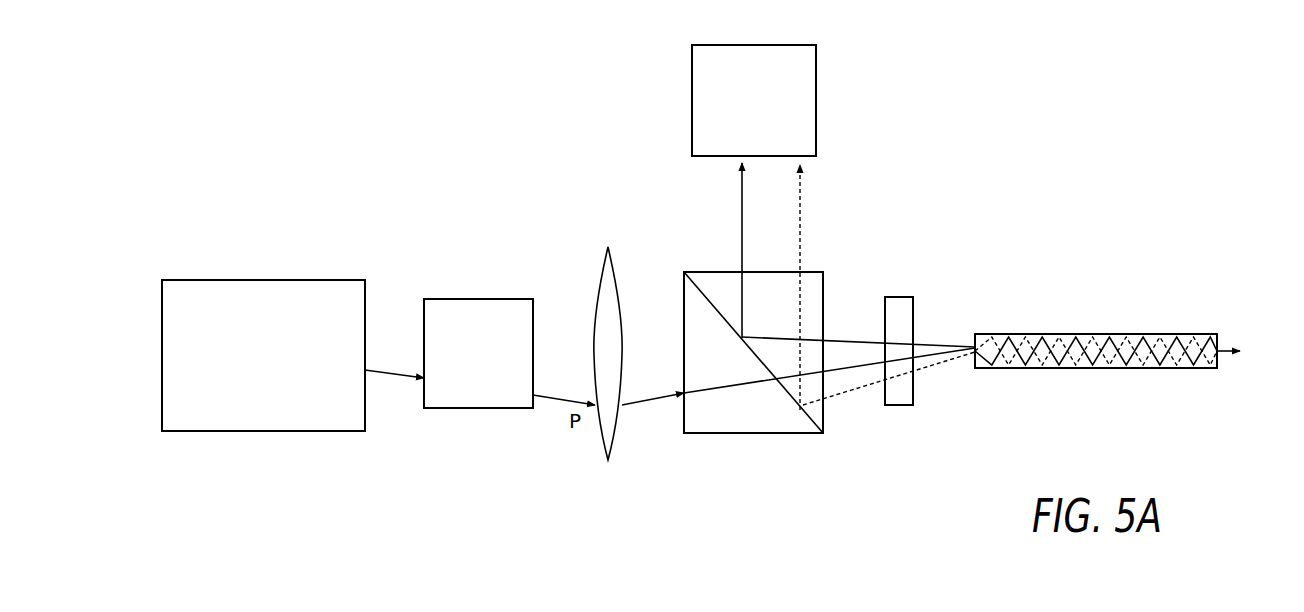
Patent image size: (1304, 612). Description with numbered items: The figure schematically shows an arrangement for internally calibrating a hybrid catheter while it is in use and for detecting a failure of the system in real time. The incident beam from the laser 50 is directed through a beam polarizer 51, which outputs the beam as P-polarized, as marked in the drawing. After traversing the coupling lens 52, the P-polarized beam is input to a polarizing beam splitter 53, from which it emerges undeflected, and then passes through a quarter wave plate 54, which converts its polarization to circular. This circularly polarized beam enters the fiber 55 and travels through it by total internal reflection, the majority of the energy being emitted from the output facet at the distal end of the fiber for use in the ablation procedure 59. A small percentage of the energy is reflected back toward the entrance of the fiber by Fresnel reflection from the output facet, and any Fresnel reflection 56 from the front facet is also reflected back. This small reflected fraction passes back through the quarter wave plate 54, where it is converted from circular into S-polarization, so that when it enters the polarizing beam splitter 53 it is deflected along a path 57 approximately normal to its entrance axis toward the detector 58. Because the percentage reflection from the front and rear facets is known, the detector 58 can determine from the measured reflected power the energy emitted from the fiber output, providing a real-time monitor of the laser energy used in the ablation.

The laser 50 is at (298, 431).
The beam polarizer 51 is at (470, 408).
The coupling lens 52 is at (608, 460).
The polarizing beam splitter 53 is at (750, 433).
The quarter wave plate 54 is at (900, 405).
The fiber 55 is at (1150, 368).
The Fresnel reflection 56 is at (948, 340).
The path 57 is at (803, 222).
The detector 58 is at (816, 100).
The ablation procedure 59 is at (1276, 365).